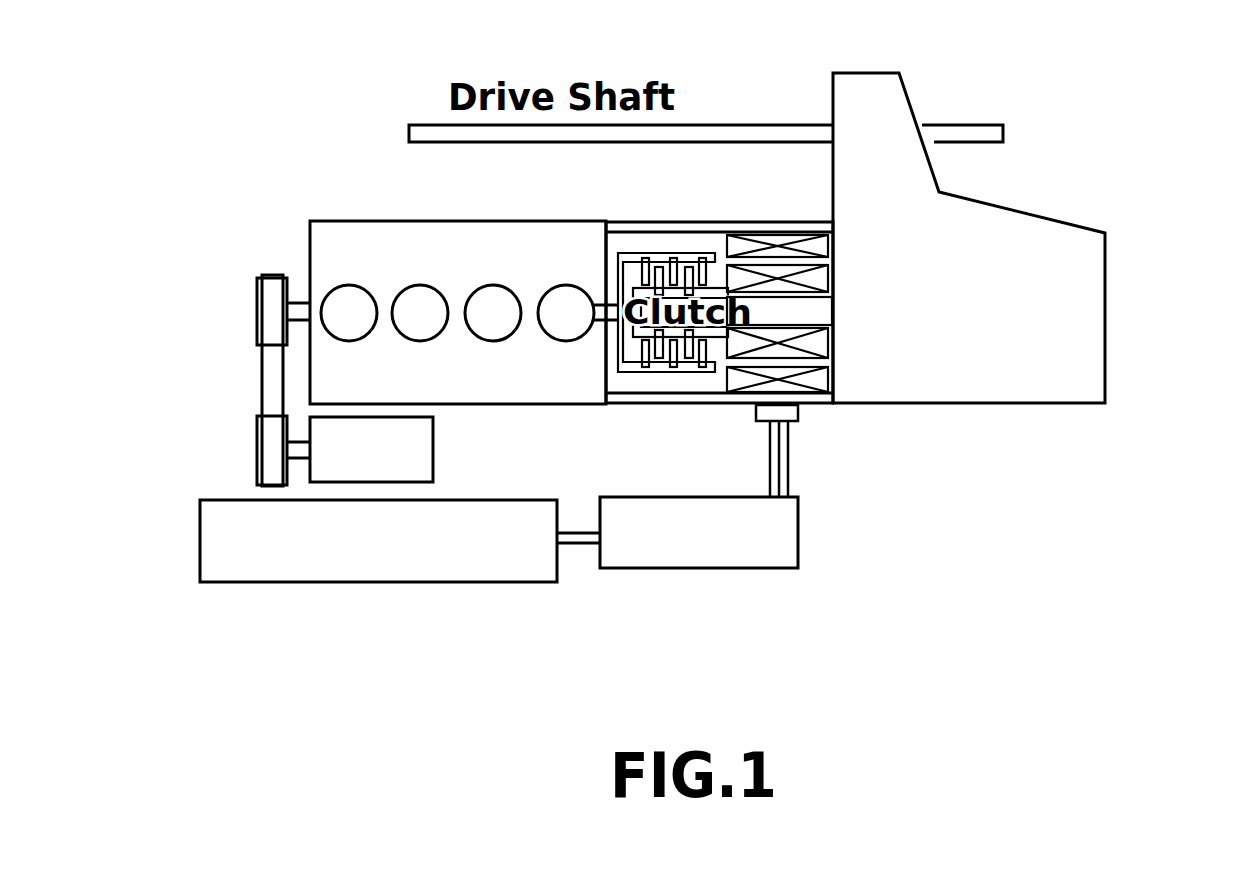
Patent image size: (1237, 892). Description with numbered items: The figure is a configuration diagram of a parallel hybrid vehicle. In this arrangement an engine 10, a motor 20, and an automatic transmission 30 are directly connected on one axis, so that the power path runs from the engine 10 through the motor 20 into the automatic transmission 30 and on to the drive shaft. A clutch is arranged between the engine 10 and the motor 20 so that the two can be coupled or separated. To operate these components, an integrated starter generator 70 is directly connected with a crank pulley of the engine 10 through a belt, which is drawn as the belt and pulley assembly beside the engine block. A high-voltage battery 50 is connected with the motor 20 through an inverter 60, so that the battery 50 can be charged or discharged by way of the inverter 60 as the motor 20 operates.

The engine 10 is at (385, 220).
The motor 20 is at (767, 233).
The automatic transmission 30 is at (1060, 222).
The high-voltage battery 50 is at (435, 582).
The inverter 60 is at (798, 527).
The integrated starter generator (ISG) 70 is at (433, 445).